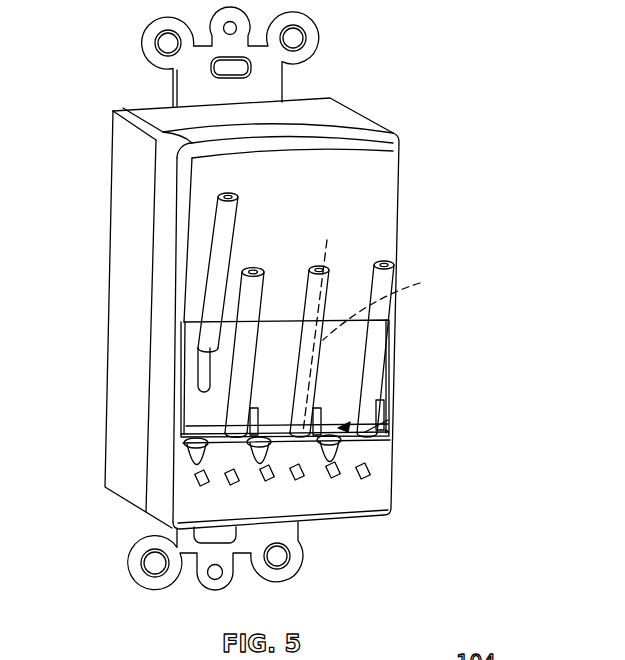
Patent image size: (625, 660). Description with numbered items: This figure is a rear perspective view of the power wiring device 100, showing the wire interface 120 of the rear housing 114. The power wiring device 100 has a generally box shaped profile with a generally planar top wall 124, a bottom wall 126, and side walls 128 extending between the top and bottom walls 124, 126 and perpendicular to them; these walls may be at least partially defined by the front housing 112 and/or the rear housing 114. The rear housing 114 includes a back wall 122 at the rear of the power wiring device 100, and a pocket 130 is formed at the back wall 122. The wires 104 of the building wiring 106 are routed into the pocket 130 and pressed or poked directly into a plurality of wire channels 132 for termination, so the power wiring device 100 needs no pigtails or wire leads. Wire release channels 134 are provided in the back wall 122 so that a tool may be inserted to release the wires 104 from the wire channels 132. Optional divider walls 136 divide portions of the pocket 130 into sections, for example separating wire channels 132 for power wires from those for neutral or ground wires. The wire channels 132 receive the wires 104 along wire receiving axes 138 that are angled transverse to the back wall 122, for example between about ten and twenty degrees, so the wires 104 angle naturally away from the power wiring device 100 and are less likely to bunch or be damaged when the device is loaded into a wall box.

The power wiring device 100 is at (269, 298).
The wires 104 is at (202, 302).
The building wiring 106 is at (324, 262).
The front housing 112 is at (122, 243).
The rear housing 114 is at (158, 273).
The wire interface 120 is at (347, 442).
The back wall 122 is at (380, 178).
The top wall 124 is at (329, 106).
The bottom wall 126 is at (326, 518).
The side walls 128 is at (122, 396).
The pocket 130 is at (341, 367).
The wire channels 132 is at (340, 422).
The wire release channels 134 is at (190, 481).
The divider walls 136 is at (262, 430).
The wire receiving axes 138 is at (396, 306).